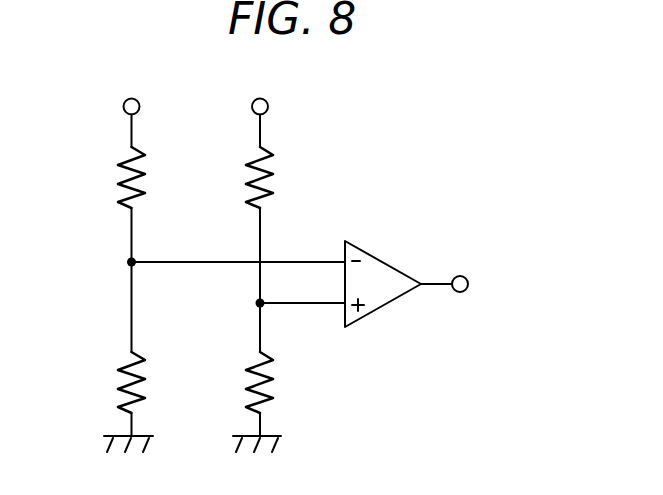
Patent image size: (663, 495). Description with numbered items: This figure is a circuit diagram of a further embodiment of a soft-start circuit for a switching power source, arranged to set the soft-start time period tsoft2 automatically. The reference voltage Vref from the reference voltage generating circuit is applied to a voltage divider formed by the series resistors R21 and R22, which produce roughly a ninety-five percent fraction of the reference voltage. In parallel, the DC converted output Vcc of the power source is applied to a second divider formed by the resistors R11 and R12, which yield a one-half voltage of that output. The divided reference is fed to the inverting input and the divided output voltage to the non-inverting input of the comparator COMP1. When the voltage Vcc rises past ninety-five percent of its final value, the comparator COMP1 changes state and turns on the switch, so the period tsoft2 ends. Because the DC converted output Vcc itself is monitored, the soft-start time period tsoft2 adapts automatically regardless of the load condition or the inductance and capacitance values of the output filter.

The reference voltage Vref is at (124, 104).
The DC converted output Vcc is at (253, 104).
The resistor R21 is at (118, 203).
The resistor R11 is at (246, 203).
The resistor R22 is at (118, 408).
The resistor R12 is at (246, 408).
The comparator COMP1 is at (366, 251).
The soft-start time period tsoft2 is at (468, 278).